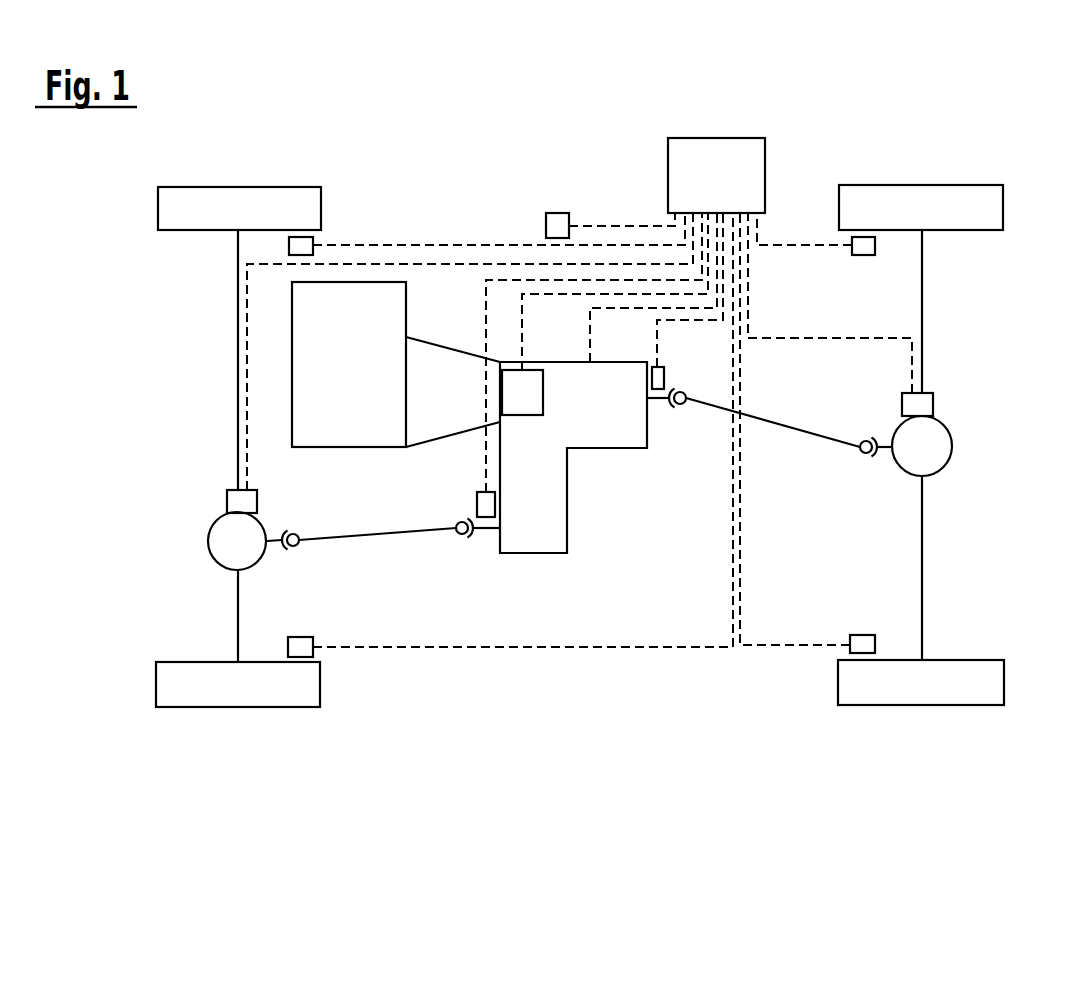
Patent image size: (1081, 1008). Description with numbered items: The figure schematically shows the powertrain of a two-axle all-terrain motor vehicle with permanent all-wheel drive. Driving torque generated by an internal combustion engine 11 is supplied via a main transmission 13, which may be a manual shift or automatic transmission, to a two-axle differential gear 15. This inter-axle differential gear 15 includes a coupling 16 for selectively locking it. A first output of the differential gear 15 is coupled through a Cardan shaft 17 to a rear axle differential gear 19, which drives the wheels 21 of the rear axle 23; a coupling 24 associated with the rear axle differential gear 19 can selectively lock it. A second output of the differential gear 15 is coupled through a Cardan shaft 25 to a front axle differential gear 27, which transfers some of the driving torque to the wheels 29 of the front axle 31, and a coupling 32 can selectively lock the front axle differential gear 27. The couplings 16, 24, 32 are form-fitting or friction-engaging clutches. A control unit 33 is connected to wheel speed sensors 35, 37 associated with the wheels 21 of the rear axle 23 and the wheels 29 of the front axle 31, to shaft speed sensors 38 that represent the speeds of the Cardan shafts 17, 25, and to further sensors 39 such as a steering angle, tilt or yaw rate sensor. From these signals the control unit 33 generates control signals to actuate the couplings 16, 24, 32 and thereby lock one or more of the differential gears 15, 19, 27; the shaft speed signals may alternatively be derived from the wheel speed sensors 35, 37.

The internal combustion engine 11 is at (369, 375).
The main transmission 13 is at (464, 408).
The two-axle differential gear 15 is at (591, 418).
The coupling 16 is at (527, 383).
The Cardan shaft 17 is at (774, 421).
The rear axle differential gear 19 is at (952, 437).
The wheels 21 is at (975, 185).
The rear axle 23 is at (972, 342).
The coupling 24 is at (935, 403).
The Cardan shaft 25 is at (378, 536).
The front axle differential gear 27 is at (208, 536).
The wheels 29 is at (193, 188).
The front axle 31 is at (212, 415).
The coupling 32 is at (227, 501).
The control unit 33 is at (735, 188).
The wheel speed sensors 35 is at (862, 256).
The wheel speed sensors 37 is at (315, 242).
The shaft speed sensors 38 is at (477, 500).
The further sensors 39 is at (557, 213).